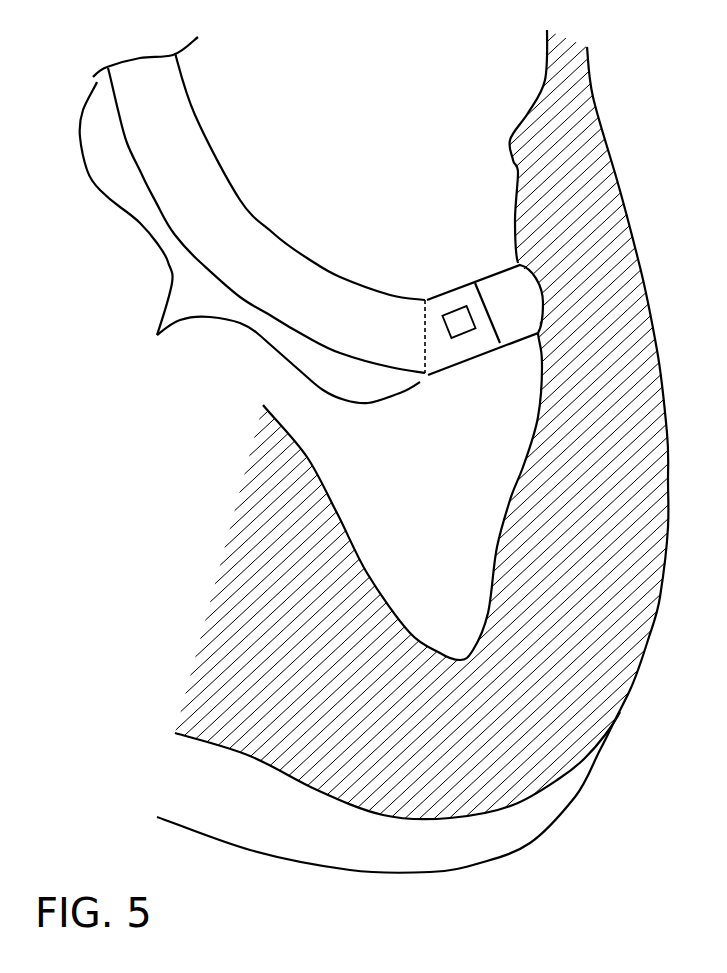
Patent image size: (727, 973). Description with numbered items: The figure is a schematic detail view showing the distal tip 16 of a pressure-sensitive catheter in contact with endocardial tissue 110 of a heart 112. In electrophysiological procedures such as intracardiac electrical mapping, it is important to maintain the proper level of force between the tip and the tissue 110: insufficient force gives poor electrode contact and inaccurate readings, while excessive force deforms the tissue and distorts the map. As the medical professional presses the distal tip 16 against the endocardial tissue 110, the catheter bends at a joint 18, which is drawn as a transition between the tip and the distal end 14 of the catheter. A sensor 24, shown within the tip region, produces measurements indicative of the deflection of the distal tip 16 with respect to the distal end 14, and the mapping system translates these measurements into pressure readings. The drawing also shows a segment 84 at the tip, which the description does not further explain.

The distal end 14 is at (250, 220).
The distal tip 16 is at (539, 333).
The joint 18 is at (423, 337).
The sensor 24 is at (447, 315).
The distal tip segment 84 is at (497, 283).
The endocardial tissue 110 is at (523, 118).
The heart 112 is at (617, 183).